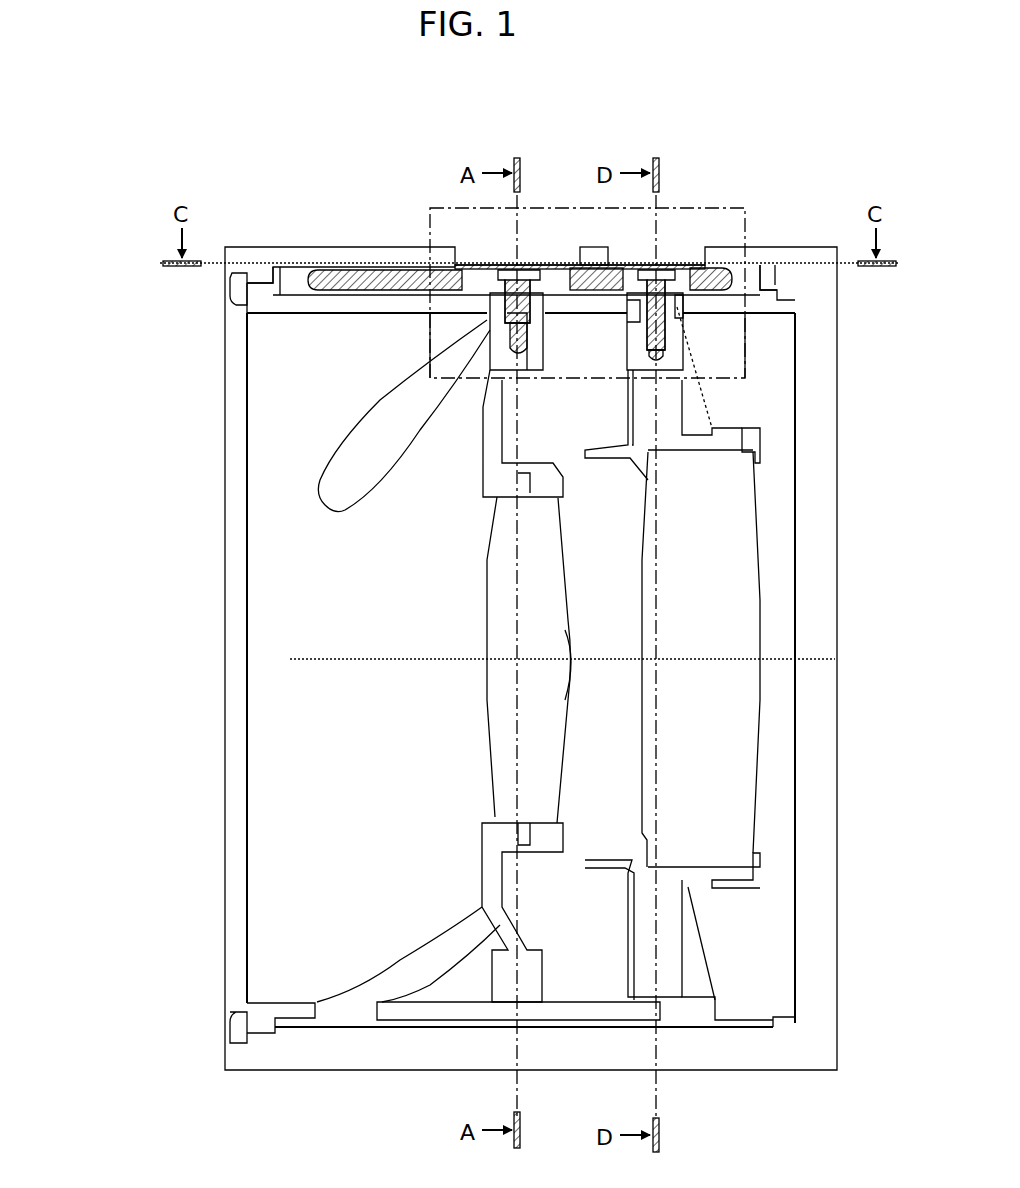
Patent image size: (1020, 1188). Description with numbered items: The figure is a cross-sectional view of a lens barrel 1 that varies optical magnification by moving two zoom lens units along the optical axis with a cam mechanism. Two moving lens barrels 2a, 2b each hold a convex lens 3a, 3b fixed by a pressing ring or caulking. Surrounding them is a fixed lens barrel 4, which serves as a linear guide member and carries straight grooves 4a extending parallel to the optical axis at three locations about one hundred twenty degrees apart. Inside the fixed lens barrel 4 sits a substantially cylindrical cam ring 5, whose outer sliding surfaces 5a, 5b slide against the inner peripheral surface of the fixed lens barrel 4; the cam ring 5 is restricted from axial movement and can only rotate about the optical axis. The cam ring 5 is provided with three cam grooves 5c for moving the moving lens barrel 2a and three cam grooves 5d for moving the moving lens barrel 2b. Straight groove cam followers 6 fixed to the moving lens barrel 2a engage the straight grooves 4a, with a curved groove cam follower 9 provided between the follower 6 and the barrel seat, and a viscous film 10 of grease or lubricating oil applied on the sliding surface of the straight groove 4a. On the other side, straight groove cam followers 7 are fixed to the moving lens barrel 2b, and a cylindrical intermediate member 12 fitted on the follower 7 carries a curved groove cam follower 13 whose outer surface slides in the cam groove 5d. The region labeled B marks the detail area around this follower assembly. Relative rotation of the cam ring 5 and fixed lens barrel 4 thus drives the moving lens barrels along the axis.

The lens barrel 1 is at (106, 126).
The moving lens barrel 2a is at (490, 478).
The moving lens barrel 2b is at (742, 440).
The lens 3a is at (495, 590).
The lens 3b is at (730, 532).
The fixed lens barrel 4 is at (760, 265).
The straight grooves 4a is at (294, 272).
The cam ring 5 is at (265, 384).
The sliding surface 5a is at (258, 275).
The sliding surface 5b is at (780, 295).
The cam grooves 5c is at (305, 480).
The cam grooves 5d is at (700, 402).
The straight groove cam follower 6 is at (232, 290).
The straight groove cam follower 7 is at (680, 290).
The curved groove cam follower 9 is at (540, 300).
The viscous film 10 is at (350, 275).
The intermediate member 12 is at (663, 317).
The curved groove cam follower 13 is at (683, 310).
The section region B is at (677, 208).